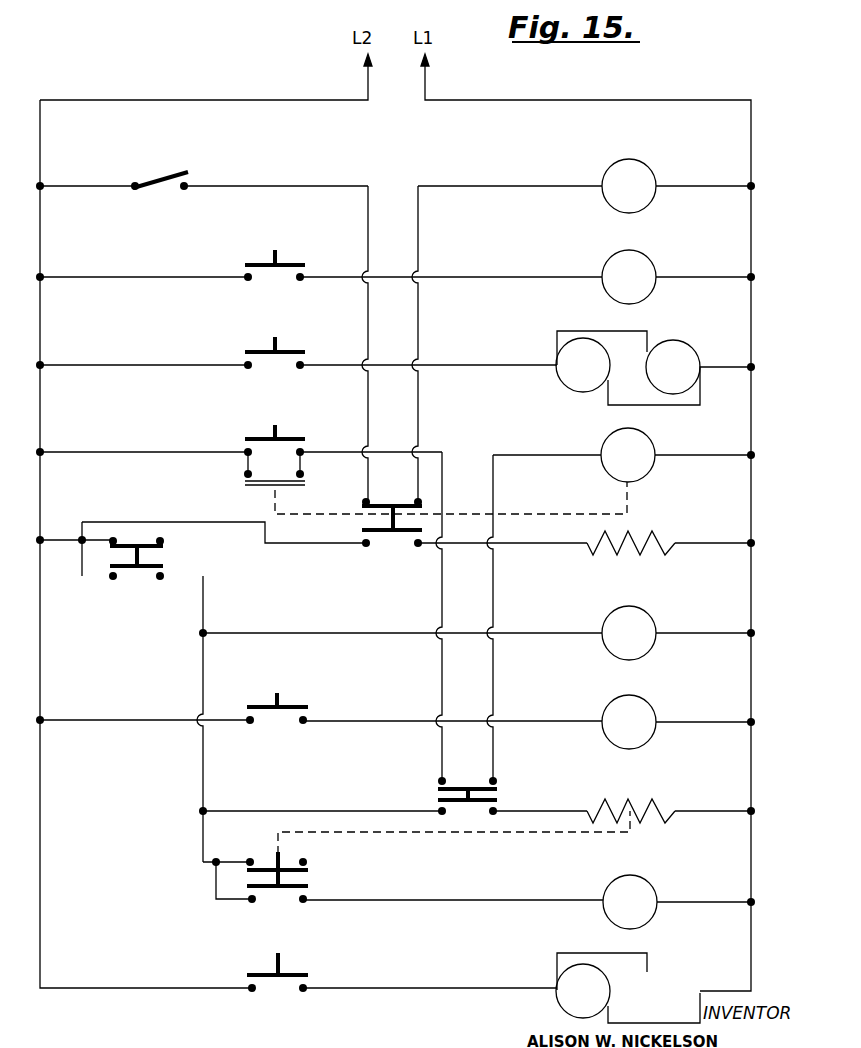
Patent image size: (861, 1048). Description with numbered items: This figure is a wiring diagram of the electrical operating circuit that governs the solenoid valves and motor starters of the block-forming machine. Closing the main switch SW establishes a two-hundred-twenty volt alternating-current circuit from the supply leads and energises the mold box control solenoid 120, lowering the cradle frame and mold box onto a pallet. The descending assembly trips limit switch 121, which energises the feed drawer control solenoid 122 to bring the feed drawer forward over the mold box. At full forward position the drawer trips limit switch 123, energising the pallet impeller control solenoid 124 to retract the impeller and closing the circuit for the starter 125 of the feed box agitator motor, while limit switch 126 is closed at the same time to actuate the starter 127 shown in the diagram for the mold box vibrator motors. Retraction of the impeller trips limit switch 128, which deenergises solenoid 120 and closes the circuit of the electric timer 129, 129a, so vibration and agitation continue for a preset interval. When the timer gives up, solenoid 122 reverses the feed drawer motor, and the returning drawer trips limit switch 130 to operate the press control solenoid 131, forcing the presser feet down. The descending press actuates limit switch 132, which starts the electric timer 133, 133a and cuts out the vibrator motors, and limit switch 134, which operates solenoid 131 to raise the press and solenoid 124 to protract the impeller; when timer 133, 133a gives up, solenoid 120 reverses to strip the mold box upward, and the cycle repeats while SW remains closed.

The main switch SW is at (147, 175).
The mold box control solenoid 120 is at (615, 190).
The limit switch 121 is at (269, 260).
The feed drawer control solenoid 122 is at (615, 281).
The limit switch 123 is at (269, 345).
The pallet impeller control solenoid 124 is at (569, 369).
The starter 125 is at (673, 367).
The limit switch 126 is at (269, 438).
The relay coil 127 is at (628, 455).
The limit switch 128 is at (402, 487).
The electric timer 129 is at (658, 536).
The electric timer contact 129a is at (163, 553).
The limit switch 130 is at (288, 700).
The press control solenoid 131 is at (615, 726).
The limit switch 132 is at (450, 785).
The electric timer 133 is at (633, 806).
The electric timer contact 133a is at (303, 878).
The limit switch 134 is at (284, 970).